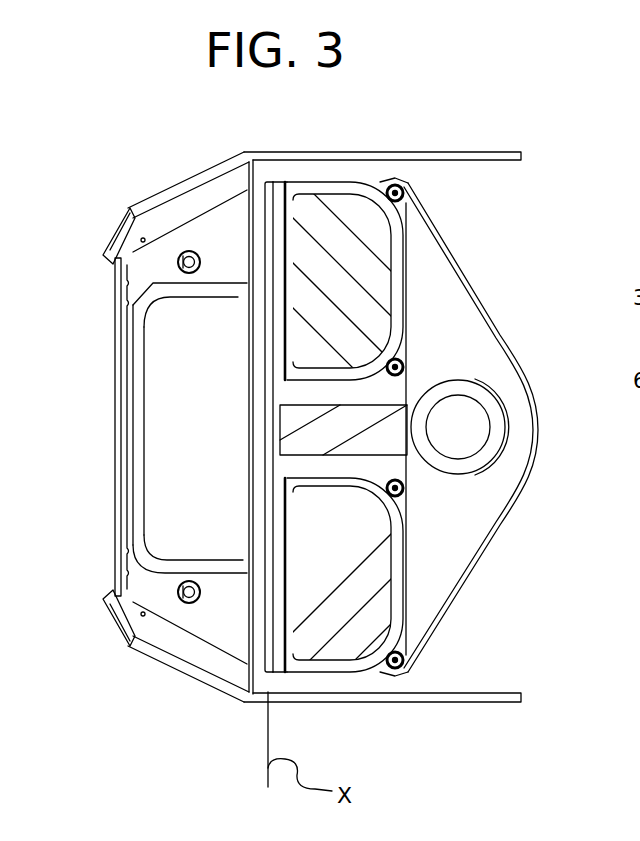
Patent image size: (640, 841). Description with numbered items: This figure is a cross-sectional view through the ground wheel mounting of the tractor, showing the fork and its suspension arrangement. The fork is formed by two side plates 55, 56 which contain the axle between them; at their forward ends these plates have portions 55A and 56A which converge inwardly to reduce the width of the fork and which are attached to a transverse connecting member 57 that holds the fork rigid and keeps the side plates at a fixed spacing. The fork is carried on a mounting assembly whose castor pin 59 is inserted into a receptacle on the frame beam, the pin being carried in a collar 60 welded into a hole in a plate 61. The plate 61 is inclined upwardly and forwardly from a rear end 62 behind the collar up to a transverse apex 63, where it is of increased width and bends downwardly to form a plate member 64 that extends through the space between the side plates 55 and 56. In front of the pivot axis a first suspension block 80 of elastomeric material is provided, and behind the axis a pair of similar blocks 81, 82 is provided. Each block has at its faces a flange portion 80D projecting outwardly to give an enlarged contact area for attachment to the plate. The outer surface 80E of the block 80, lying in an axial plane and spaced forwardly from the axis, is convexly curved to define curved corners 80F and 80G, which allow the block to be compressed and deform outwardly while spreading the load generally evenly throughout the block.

The side plate 55 is at (467, 693).
The converging portion of side plate 55A is at (152, 652).
The side plate 56 is at (451, 160).
The converging portion of side plate 56A is at (147, 207).
The transverse connecting member 57 is at (123, 328).
The castor pin 59 is at (478, 417).
The collar 60 is at (452, 388).
The plate 61 is at (496, 352).
The rear end of plate 62 is at (537, 460).
The apex 63 is at (253, 456).
The plate member 64 is at (177, 453).
The first suspension block 80 is at (155, 487).
The flange portion 80D is at (222, 264).
The outer surface of block 80E is at (150, 518).
The curved corner 80F is at (153, 563).
The curved corner 80G is at (158, 302).
The suspension block 81 is at (385, 551).
The suspension block 82 is at (384, 288).